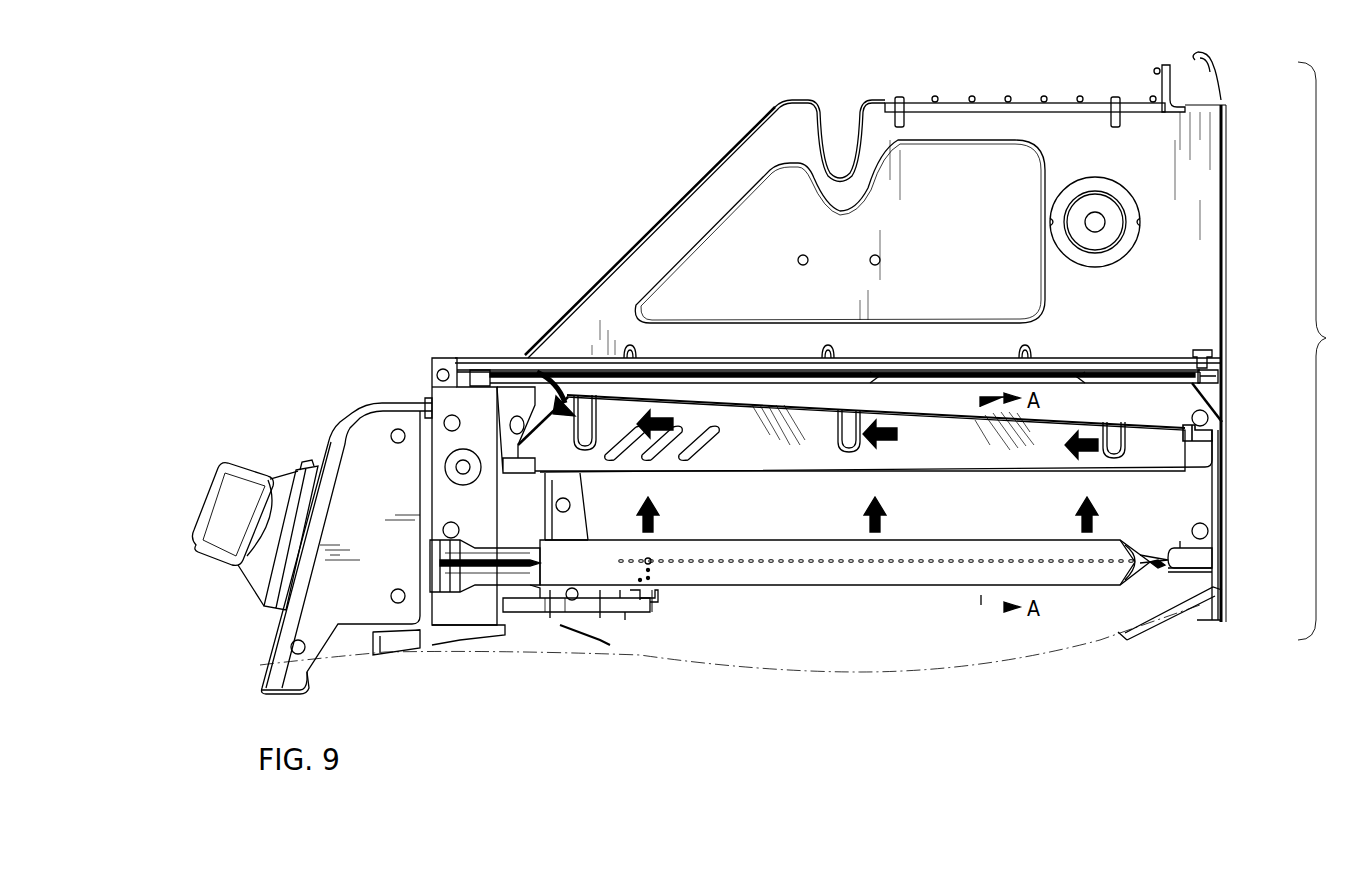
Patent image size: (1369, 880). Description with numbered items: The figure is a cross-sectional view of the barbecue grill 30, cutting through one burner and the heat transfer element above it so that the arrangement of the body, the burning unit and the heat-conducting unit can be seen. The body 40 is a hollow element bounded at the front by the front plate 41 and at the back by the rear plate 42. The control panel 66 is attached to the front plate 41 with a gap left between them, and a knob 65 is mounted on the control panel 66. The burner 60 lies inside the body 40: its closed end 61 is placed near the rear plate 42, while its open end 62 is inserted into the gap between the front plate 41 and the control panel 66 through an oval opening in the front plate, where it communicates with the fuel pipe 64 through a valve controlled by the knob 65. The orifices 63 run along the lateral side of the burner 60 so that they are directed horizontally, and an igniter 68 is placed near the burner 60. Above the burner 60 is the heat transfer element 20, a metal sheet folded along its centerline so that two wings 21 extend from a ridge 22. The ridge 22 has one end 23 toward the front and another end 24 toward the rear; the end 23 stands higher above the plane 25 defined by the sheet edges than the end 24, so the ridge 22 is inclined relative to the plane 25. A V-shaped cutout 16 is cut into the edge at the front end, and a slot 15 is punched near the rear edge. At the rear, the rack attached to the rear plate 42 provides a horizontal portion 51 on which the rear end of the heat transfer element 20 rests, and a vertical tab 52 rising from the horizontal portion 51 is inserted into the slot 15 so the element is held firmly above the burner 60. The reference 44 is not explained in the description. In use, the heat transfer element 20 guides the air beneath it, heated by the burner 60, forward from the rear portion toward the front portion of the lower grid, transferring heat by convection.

The slot 15 is at (1160, 412).
The V-shaped cutout 16 is at (538, 430).
The heat transfer element 20 is at (745, 393).
The wings 21 is at (1160, 470).
The ridge 22 is at (1060, 380).
The end of the ridge 23 is at (566, 398).
The end of the ridge 24 is at (1200, 437).
The plane 25 is at (917, 445).
The barbecue grill 30 is at (1329, 351).
The body 40 is at (1226, 622).
The front plate 41 is at (440, 358).
The rear plate 42 is at (1215, 569).
The mounting bracket 44 is at (523, 585).
The horizontal portion 51 is at (1170, 466).
The vertical tabs 52 is at (1210, 418).
The burner 60 is at (821, 572).
The closed end 61 is at (1153, 568).
The open end 62 is at (440, 585).
The orifices 63 is at (731, 572).
The pipe 64 is at (412, 636).
The knob 65 is at (230, 490).
The control panel 66 is at (340, 420).
The igniter 68 is at (620, 604).